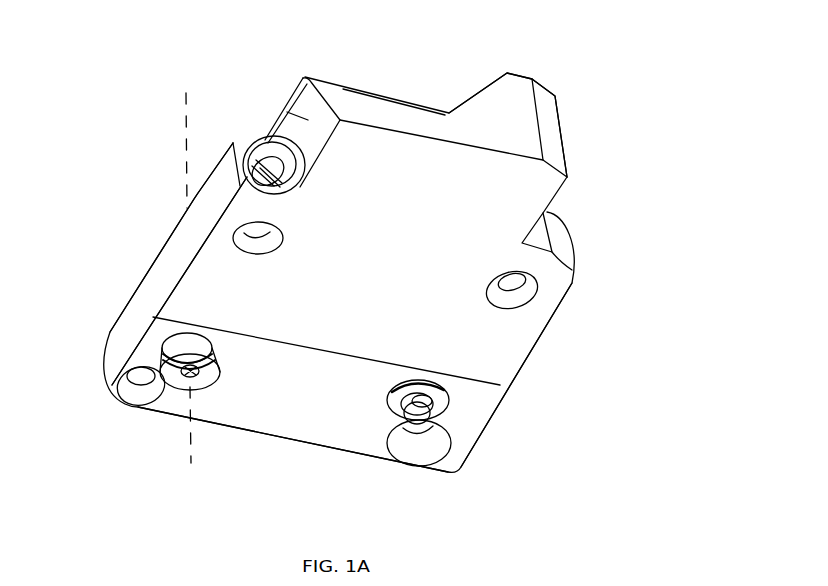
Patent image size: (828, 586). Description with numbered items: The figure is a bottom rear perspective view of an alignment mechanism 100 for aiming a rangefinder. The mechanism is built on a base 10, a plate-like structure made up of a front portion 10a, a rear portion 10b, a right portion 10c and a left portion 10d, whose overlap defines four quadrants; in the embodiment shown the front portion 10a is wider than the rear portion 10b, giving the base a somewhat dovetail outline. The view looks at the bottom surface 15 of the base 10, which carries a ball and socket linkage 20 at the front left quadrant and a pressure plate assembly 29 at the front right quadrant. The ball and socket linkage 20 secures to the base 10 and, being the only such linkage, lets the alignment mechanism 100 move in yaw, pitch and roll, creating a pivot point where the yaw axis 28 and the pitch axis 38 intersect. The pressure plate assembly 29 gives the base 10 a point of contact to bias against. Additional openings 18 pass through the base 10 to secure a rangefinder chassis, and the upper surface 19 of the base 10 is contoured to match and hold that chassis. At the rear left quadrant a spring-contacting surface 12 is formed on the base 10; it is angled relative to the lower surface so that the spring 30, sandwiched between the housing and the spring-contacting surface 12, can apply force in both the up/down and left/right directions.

The alignment mechanism 100 is at (609, 31).
The base 10 is at (604, 335).
The front portion 10a is at (300, 445).
The rear portion 10b is at (511, 110).
The right portion 10c is at (500, 385).
The left portion 10d is at (160, 280).
The spring-contacting surface 12 is at (285, 108).
The bottom surface 15 is at (403, 272).
The openings 18 is at (258, 245).
The upper surface 19 is at (397, 88).
The ball and socket linkage 20 is at (226, 360).
The yaw axis 28 is at (178, 152).
The pressure plate assembly 29 is at (457, 416).
The spring 30 is at (267, 137).
The pitch axis 38 is at (470, 413).